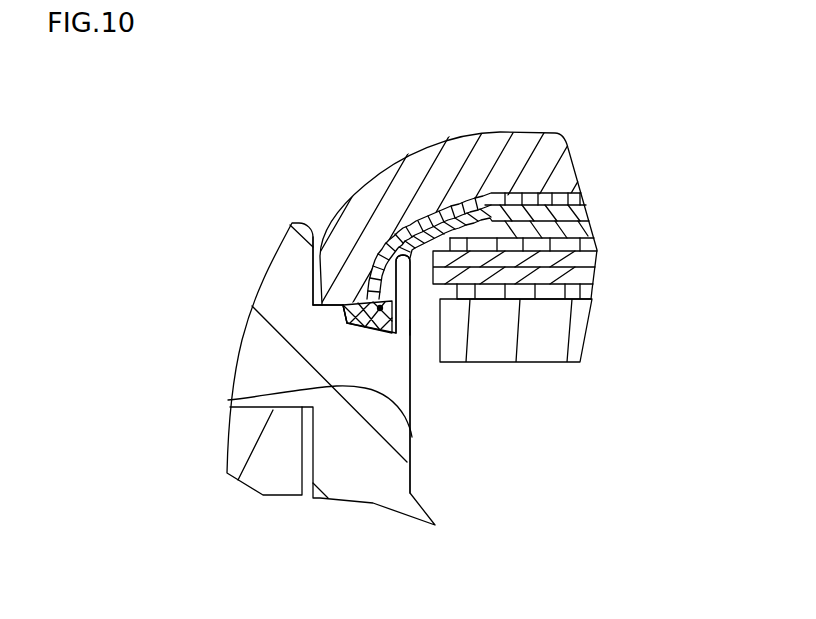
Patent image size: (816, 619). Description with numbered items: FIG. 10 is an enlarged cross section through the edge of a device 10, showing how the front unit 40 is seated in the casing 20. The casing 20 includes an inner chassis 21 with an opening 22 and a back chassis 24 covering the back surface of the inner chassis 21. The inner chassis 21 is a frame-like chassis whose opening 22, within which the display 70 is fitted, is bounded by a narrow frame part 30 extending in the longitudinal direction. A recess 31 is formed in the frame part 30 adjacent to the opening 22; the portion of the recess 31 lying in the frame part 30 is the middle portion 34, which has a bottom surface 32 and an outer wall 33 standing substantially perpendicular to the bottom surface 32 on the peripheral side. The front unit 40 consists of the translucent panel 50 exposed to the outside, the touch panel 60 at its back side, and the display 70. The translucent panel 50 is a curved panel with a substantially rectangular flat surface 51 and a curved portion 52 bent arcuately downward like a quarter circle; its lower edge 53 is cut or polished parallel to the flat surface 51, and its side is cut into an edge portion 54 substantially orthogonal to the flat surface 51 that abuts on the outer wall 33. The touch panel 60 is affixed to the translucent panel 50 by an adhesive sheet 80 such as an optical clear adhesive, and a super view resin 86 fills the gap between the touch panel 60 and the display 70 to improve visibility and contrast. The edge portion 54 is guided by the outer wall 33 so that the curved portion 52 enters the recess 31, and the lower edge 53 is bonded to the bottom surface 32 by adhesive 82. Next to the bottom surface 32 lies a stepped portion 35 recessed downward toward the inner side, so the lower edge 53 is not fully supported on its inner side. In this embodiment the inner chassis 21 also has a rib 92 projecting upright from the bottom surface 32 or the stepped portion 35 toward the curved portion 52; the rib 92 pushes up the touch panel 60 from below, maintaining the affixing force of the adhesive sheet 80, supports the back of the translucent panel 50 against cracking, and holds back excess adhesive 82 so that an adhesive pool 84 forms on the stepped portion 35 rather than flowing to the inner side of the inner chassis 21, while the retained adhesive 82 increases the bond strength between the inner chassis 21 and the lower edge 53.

The assembly 10 is at (607, 120).
The casing 20 is at (285, 495).
The inner chassis 21 is at (341, 466).
The back chassis 24 is at (287, 466).
The opening 22 is at (228, 400).
The frame part 30 is at (258, 368).
The recess 31 is at (243, 282).
The middle portion 34 is at (203, 282).
The outer wall 33 is at (313, 262).
The bottom surface 32 is at (327, 292).
The stepped portion 35 is at (348, 317).
The front unit 40 is at (479, 236).
The translucent panel 50 is at (567, 175).
The flat surface 51 is at (492, 147).
The curved portion 52 is at (380, 308).
The lower edge 53 is at (348, 300).
The edge portion 54 is at (316, 258).
The touch panel 60 is at (572, 210).
The display 70 is at (567, 261).
The adhesive sheet 80 is at (535, 195).
The adhesive 82 is at (411, 322).
The adhesive pool 84 is at (378, 333).
The super view resin 86 is at (560, 300).
The rib 92 is at (411, 280).